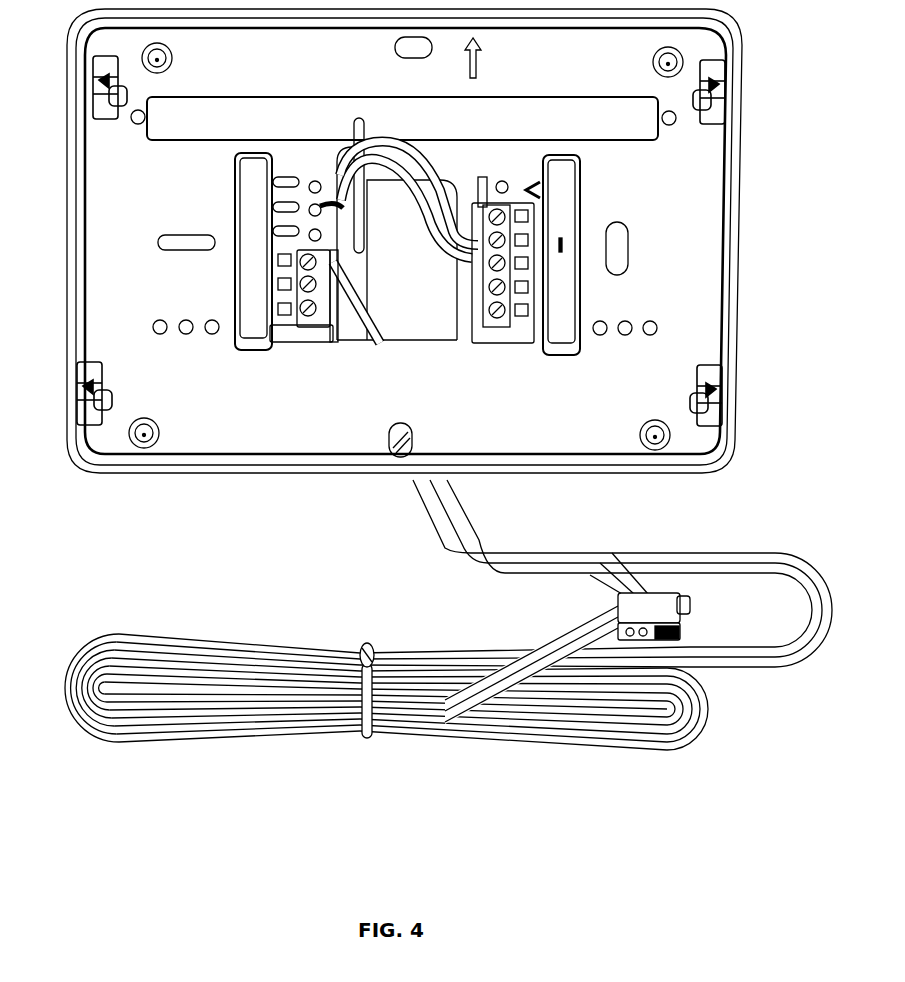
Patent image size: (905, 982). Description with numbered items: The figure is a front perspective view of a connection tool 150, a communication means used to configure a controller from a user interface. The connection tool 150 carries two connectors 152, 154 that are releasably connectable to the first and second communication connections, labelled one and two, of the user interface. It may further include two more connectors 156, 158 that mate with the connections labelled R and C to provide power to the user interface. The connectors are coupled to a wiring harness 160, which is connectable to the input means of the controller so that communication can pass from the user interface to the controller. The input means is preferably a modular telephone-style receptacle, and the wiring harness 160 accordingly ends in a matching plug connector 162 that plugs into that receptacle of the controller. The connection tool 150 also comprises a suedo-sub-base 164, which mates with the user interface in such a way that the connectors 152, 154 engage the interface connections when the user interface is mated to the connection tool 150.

The connection tool 150 is at (339, 800).
The connector 152 is at (550, 207).
The connector 154 is at (530, 253).
The connector 156 is at (263, 250).
The connector 158 is at (280, 330).
The wiring harness 160 is at (422, 510).
The RJ-11 plug connector 162 is at (687, 630).
The suedo-sub-base 164 is at (733, 380).